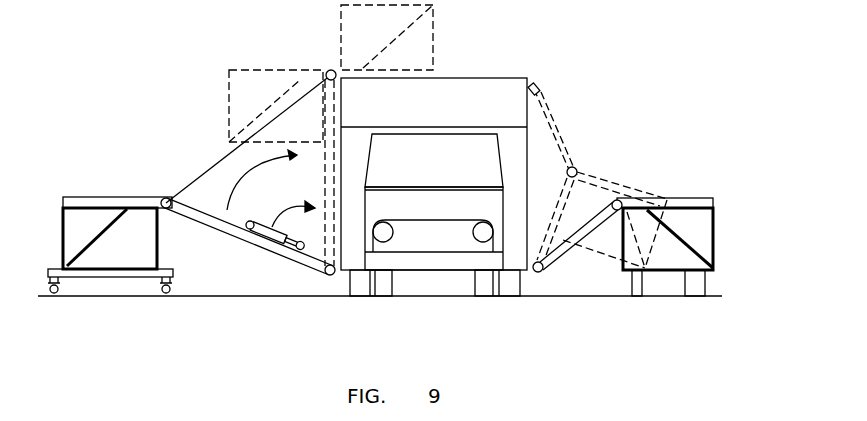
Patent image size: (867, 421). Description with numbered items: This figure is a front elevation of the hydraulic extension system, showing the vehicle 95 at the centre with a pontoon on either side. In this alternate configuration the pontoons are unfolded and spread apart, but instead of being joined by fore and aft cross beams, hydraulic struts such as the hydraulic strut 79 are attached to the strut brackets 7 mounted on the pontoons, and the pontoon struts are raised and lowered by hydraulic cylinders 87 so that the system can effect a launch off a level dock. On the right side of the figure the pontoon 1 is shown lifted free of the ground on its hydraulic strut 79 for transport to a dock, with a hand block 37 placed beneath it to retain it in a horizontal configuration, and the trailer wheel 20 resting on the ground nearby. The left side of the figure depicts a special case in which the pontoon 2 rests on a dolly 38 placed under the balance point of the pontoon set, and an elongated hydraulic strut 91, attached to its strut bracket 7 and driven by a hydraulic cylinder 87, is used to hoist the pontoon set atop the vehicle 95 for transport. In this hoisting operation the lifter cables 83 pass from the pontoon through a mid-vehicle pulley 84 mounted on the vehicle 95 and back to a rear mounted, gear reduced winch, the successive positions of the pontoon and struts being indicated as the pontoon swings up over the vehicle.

The pontoon 1 is at (697, 225).
The pontoon 2 is at (101, 220).
The strut bracket 7 is at (143, 200).
The trailer wheel 20 is at (698, 282).
The hand block 37 is at (633, 281).
The dolly 38 is at (120, 272).
The hydraulic strut 79 is at (600, 193).
The lifter cable 83 is at (193, 183).
The mid-vehicle pulley 84 is at (540, 86).
The hydraulic cylinder 87 is at (273, 240).
The elongated hydraulic strut 91 is at (232, 228).
The vehicle 95 is at (467, 93).